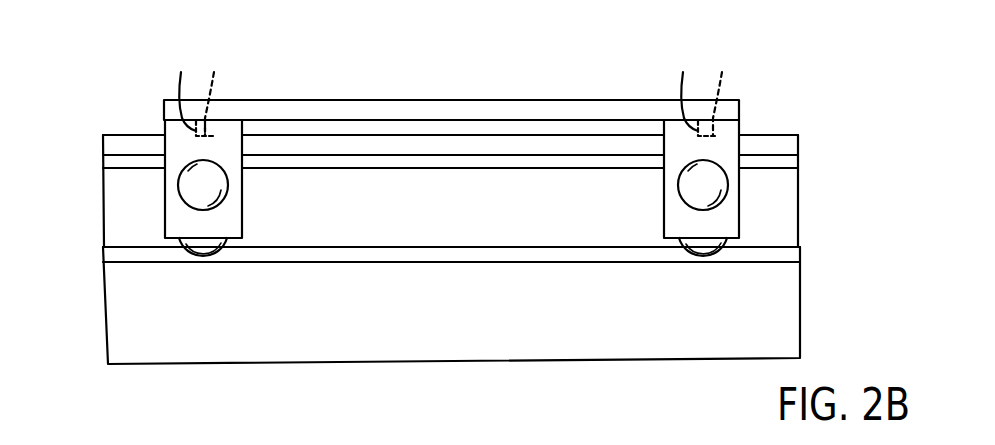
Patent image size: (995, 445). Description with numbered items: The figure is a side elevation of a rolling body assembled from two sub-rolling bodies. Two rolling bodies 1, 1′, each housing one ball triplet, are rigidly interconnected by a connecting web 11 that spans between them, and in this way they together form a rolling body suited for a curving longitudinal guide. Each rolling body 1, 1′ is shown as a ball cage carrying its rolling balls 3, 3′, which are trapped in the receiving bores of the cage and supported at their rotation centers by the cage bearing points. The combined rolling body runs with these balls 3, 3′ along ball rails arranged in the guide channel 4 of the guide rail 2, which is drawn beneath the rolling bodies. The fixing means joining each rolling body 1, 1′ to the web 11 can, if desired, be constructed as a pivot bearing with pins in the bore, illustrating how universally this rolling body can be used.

The rolling body 1 is at (676, 212).
The rolling body 1′ is at (243, 222).
The guide rail 2 is at (100, 301).
The balls 3 is at (724, 190).
The balls 3′ is at (180, 186).
The guide channel 4 is at (118, 222).
The web 11 is at (416, 110).